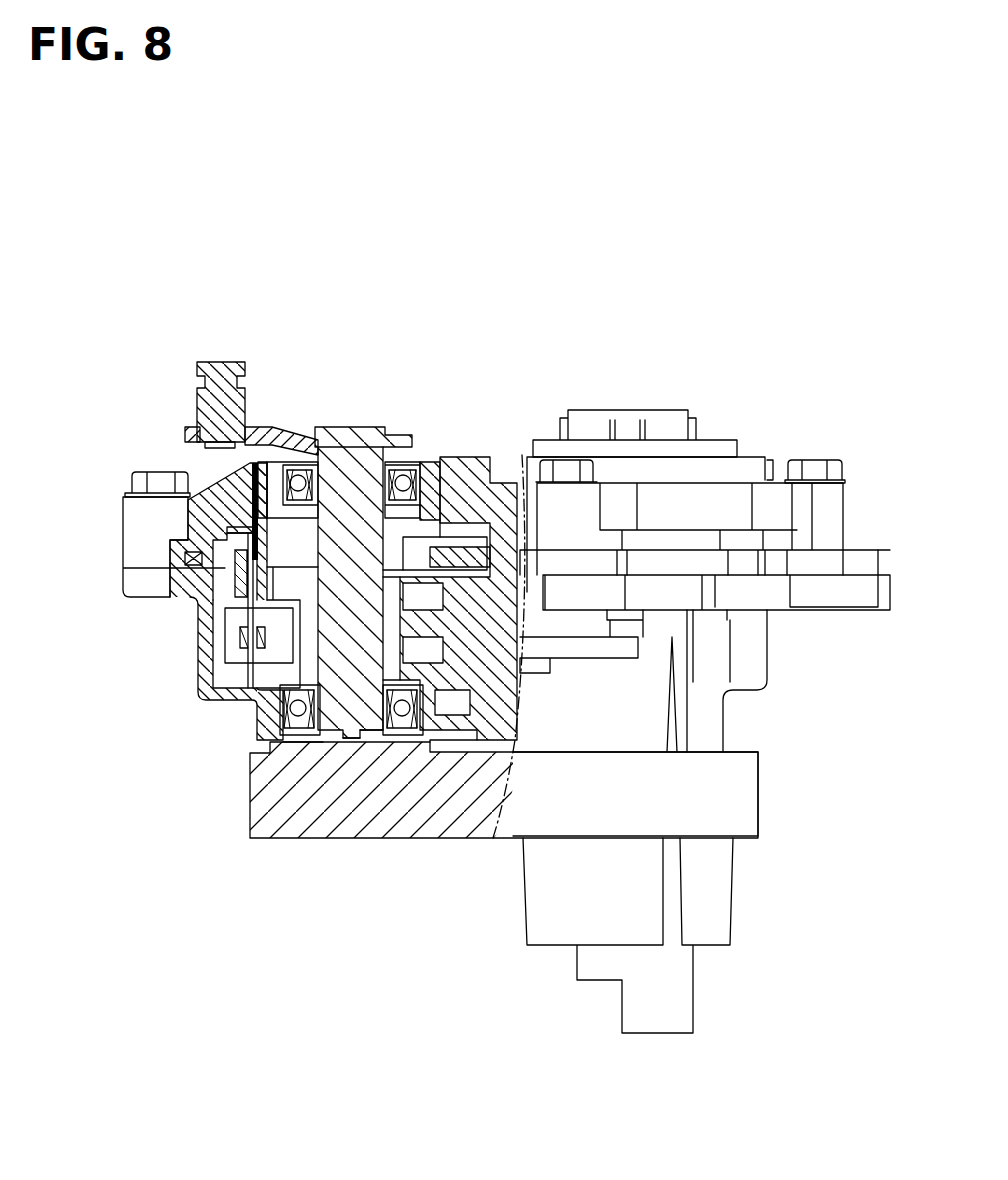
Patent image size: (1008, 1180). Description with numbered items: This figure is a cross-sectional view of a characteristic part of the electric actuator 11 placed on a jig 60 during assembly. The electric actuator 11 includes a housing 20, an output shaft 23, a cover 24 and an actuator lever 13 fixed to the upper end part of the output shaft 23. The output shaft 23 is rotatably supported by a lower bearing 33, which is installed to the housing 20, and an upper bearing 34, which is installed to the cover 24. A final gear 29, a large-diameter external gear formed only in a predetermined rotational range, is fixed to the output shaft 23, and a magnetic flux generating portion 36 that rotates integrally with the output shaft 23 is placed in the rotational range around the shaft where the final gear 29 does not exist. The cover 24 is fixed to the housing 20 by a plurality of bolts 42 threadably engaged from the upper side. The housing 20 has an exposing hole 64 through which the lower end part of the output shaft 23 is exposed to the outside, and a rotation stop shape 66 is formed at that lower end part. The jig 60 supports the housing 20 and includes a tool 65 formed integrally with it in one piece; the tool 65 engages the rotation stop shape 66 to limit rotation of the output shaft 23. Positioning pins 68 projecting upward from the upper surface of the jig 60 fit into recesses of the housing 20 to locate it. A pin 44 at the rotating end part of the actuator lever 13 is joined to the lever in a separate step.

The electric actuator 11 is at (768, 392).
The actuator lever 13 is at (190, 427).
The housing 20 is at (195, 635).
The output shaft 23 is at (360, 462).
The cover 24 is at (140, 520).
The final gear 29 is at (482, 612).
The lower bearing 33 is at (290, 727).
The upper bearing 34 is at (410, 480).
The magnetic flux generating portion 36 is at (225, 645).
The bolts 42 is at (165, 470).
The pin 44 is at (225, 370).
The jig 60 is at (512, 820).
The exposing hole 64 is at (305, 750).
The tool 65 is at (357, 737).
The rotation stop shape 66 is at (350, 737).
The positioning pins 68 is at (703, 707).